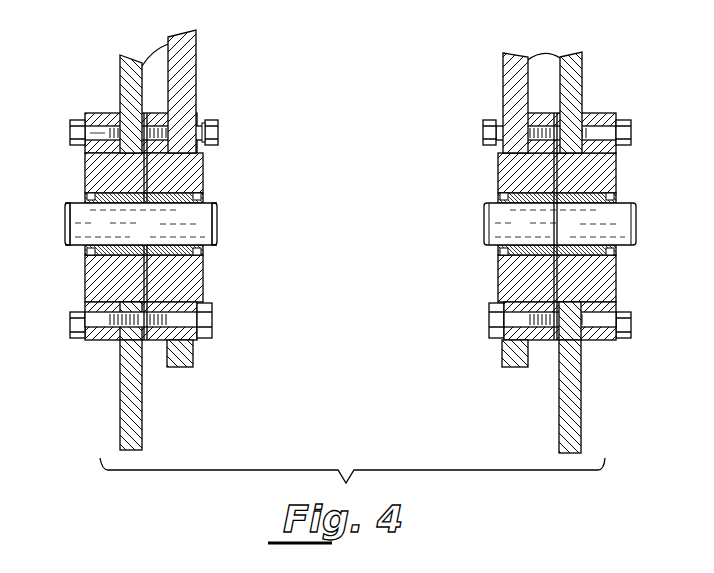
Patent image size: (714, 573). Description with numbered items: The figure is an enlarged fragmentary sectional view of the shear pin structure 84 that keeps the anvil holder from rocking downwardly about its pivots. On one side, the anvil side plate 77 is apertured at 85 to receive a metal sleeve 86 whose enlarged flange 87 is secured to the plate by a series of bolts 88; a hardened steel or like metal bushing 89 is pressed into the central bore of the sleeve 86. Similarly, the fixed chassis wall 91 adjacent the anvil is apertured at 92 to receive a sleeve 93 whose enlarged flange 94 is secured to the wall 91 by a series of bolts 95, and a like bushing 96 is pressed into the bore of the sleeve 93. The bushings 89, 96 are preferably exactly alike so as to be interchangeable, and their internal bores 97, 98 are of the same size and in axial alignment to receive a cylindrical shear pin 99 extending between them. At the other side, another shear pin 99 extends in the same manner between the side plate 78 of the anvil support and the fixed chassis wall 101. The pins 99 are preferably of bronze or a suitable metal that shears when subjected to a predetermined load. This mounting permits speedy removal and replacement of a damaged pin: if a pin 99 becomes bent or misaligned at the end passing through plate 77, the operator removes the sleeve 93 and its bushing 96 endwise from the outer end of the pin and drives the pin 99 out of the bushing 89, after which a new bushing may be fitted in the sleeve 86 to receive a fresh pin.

The anvil side plate 77 is at (188, 62).
The side plate 78 is at (508, 80).
The shear pin structure 84 is at (209, 340).
The aperture 85 is at (192, 293).
The metal sleeve 86 is at (197, 170).
The enlarged flange 87 is at (165, 117).
The bolts 88 is at (218, 130).
The bushing 89 is at (195, 196).
The fixed chassis wall 91 is at (122, 378).
The aperture 92 is at (135, 298).
The sleeve 93 is at (85, 170).
The enlarged flange 94 is at (100, 113).
The bolts 95 is at (70, 133).
The bushing 96 is at (85, 258).
The internal bore 97 is at (218, 213).
The internal bore 98 is at (67, 207).
The shear pin 99 is at (218, 235).
The fixed chassis wall 101 is at (578, 363).